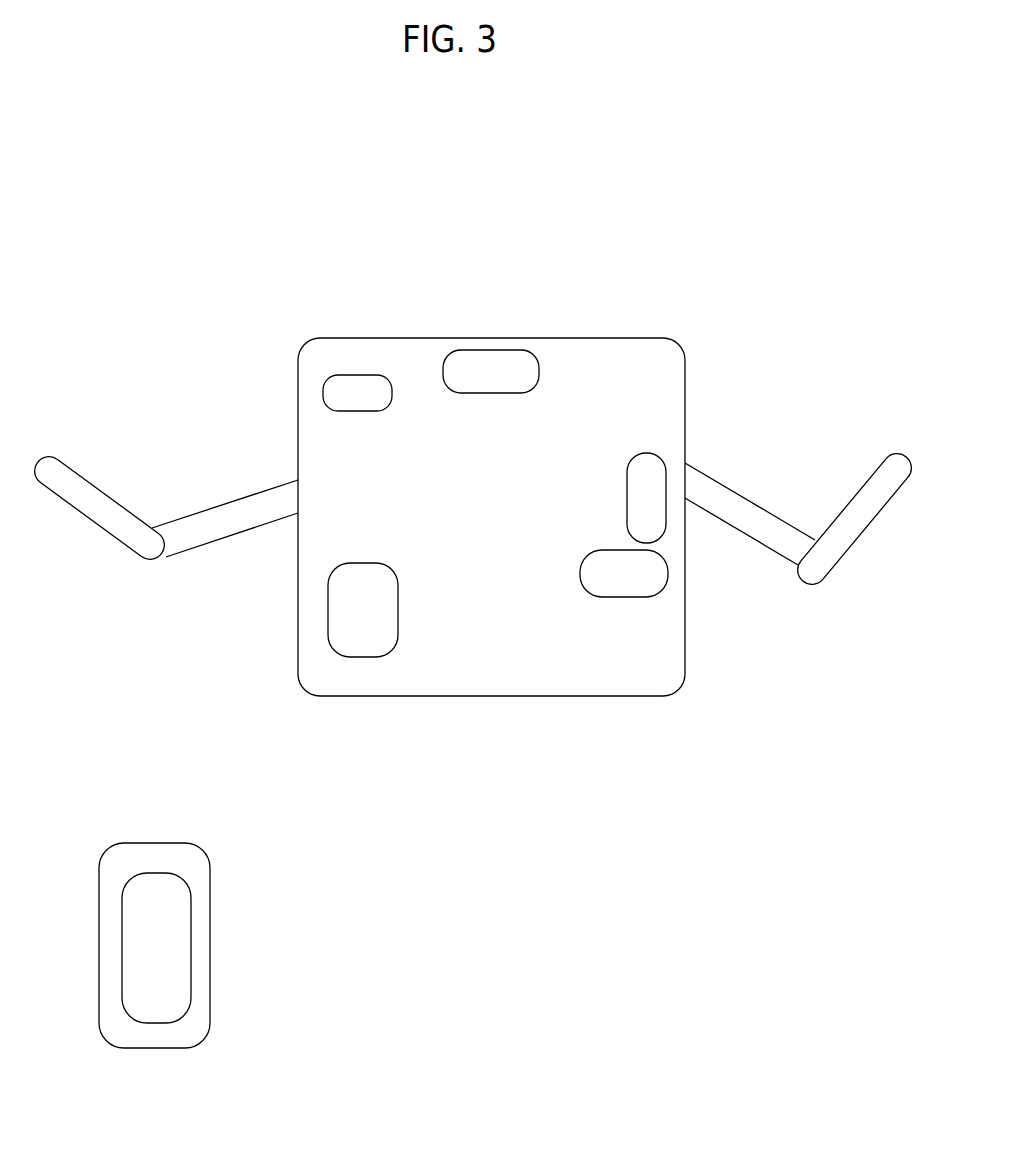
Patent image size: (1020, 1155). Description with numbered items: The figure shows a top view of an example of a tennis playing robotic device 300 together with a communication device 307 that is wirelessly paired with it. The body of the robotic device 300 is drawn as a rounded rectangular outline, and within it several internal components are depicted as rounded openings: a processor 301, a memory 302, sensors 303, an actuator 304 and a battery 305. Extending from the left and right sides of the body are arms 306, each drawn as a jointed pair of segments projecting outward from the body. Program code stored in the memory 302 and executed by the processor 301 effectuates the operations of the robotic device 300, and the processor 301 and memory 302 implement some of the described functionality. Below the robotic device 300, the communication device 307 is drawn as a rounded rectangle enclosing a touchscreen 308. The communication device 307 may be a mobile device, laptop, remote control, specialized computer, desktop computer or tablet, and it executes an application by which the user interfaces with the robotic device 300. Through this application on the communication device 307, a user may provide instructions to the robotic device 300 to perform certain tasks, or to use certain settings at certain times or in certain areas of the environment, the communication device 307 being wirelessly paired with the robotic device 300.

The tennis playing robotic device 300 is at (295, 645).
The processor 301 is at (358, 412).
The memory 302 is at (623, 597).
The sensors 303 is at (508, 395).
The actuator 304 is at (400, 632).
The battery 305 is at (628, 490).
The arms 306 is at (120, 507).
The communication device 307 is at (210, 977).
The touchscreen 308 is at (192, 925).